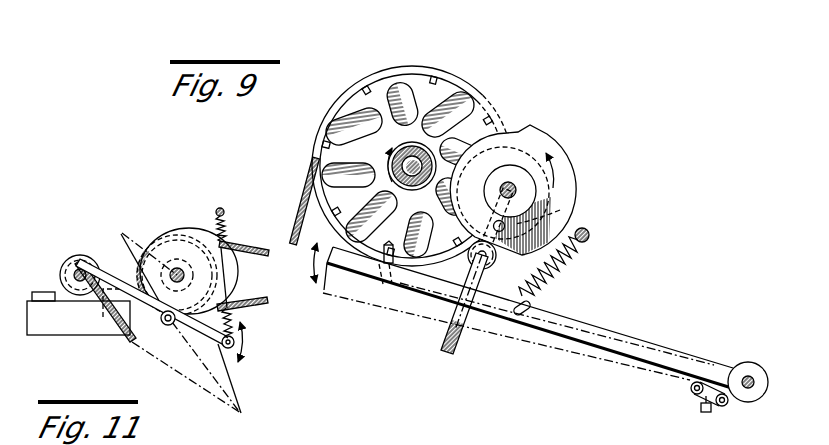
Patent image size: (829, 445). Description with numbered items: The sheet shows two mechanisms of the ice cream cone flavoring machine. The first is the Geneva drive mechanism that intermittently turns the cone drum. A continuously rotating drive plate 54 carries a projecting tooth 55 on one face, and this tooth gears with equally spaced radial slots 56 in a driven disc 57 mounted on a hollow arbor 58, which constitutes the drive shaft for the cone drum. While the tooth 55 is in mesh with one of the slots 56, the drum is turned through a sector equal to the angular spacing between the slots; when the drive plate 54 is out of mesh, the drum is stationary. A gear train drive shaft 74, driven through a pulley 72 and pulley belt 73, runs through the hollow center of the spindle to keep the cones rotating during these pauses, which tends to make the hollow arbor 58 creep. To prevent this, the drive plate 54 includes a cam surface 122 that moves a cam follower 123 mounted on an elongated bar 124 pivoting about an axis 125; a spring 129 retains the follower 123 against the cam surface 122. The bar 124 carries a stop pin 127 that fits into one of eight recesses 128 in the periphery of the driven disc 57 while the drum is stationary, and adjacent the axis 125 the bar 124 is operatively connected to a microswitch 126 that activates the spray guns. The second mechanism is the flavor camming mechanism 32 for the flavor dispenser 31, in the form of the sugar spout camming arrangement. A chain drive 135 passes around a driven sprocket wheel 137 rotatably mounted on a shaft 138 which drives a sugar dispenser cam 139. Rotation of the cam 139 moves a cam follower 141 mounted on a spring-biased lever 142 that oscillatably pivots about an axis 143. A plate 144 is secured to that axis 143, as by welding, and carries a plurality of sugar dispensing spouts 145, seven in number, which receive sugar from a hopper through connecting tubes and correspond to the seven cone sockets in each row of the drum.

In FIG. 9, the pulley 72 is at (366, 74).
In FIG. 9, the driven disc 57 is at (418, 85).
In FIG. 9, the recess 128 is at (432, 78).
In FIG. 9, the gear train drive shaft 74 is at (417, 160).
In FIG. 9, the radial slots 56 is at (425, 153).
In FIG. 9, the hollow arbor 58 is at (431, 160).
In FIG. 9, the cam surface 122 is at (533, 131).
In FIG. 9, the projecting tooth 55 is at (560, 210).
In FIG. 9, the drive plate 54 is at (550, 215).
In FIG. 9, the spring 129 is at (560, 268).
In FIG. 9, the cam follower 123 is at (490, 263).
In FIG. 9, the elongated bar 124 is at (597, 318).
In FIG. 9, the axis 125 is at (748, 375).
In FIG. 9, the microswitch 126 is at (694, 398).
In FIG. 9, the pulley belt 73 is at (299, 200).
In FIG. 9, the stop pin 127 is at (380, 262).
In FIG. 11, the flavor camming mechanism 32 is at (160, 228).
In FIG. 11, the flavor dispenser 31 is at (128, 350).
In FIG. 11, the sugar dispenser cam 139 is at (193, 228).
In FIG. 11, the shaft 138 is at (173, 270).
In FIG. 11, the driven sprocket wheel 137 is at (121, 234).
In FIG. 11, the chain drive 135 is at (243, 248).
In FIG. 11, the axis 143 is at (77, 287).
In FIG. 11, the plate 144 is at (120, 322).
In FIG. 11, the cam follower 141 is at (170, 326).
In FIG. 11, the spring-biased lever 142 is at (218, 348).
In FIG. 11, the sugar dispensing spouts 145 is at (240, 402).